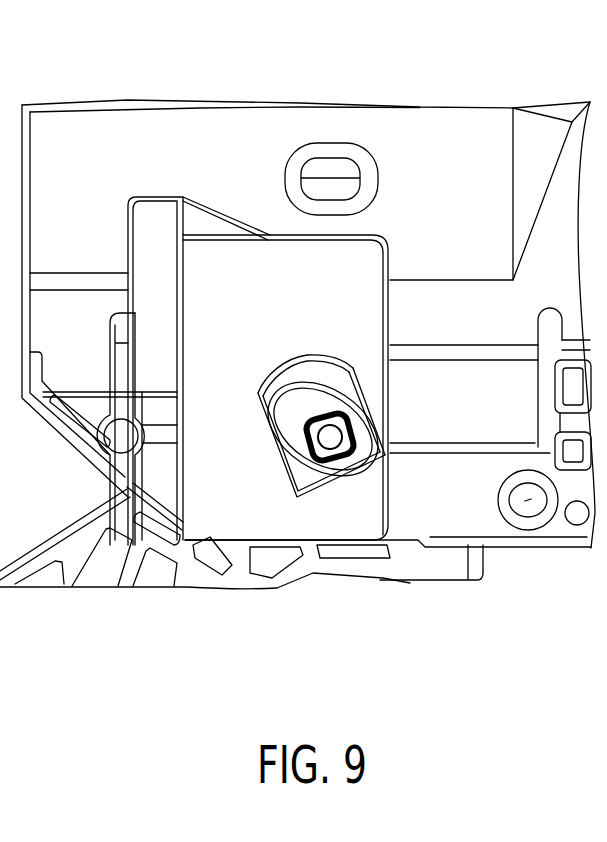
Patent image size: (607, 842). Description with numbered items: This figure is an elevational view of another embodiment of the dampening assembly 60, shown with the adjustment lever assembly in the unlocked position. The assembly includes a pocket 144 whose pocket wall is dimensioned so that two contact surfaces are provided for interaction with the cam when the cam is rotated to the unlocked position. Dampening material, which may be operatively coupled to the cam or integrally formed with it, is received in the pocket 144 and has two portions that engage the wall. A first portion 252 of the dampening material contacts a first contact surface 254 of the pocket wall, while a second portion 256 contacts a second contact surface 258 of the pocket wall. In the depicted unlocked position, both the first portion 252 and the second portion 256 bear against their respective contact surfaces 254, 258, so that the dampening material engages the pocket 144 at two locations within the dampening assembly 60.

The dampening assembly 60 is at (285, 357).
The pocket 144 is at (321, 380).
The first portion 252 is at (290, 415).
The first contact surface 254 is at (275, 405).
The second portion 256 is at (360, 475).
The second contact surface 258 is at (393, 458).